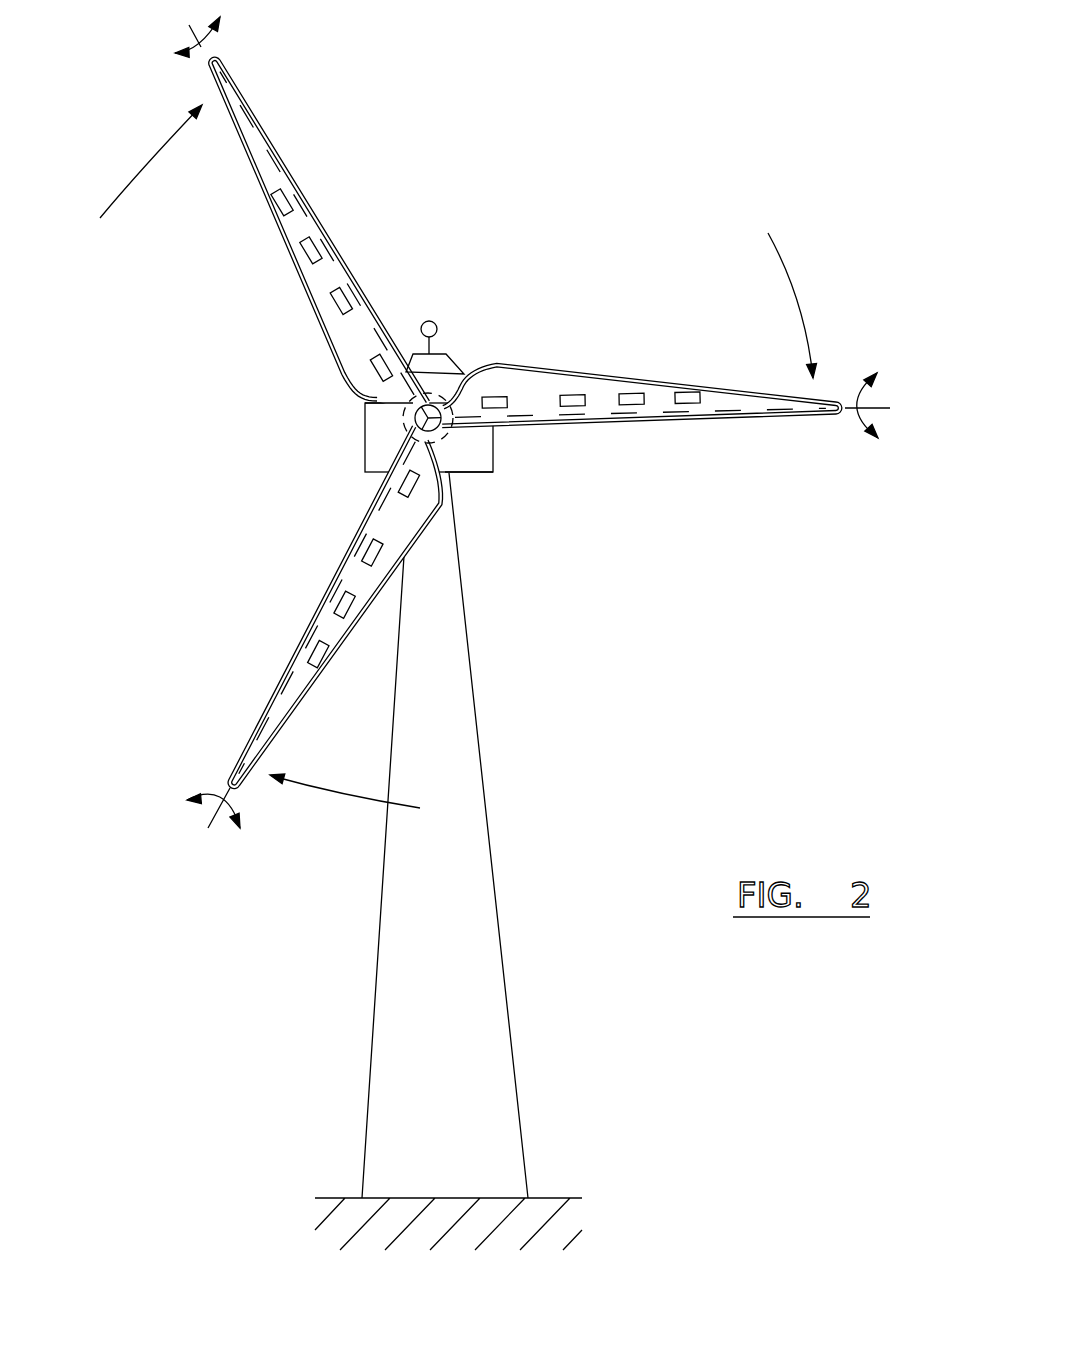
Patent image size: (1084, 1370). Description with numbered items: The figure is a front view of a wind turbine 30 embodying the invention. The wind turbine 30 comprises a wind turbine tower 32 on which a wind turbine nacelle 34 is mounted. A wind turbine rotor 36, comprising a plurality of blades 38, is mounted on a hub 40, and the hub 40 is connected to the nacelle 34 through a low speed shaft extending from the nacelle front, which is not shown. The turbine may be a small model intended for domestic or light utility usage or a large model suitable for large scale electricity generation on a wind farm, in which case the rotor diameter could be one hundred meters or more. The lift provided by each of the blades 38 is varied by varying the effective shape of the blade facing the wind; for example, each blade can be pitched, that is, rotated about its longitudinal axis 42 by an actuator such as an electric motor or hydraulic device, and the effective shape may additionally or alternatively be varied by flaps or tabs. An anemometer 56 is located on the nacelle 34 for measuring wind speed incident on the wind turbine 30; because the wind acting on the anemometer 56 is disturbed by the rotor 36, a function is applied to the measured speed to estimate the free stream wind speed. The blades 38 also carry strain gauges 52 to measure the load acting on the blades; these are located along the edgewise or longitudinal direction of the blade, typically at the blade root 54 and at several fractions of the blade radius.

The wind turbine 30 is at (495, 633).
The wind turbine tower 32 is at (492, 847).
The wind turbine nacelle 34 is at (485, 450).
The wind turbine rotor 36 is at (495, 422).
The blades 38 is at (602, 390).
The hub 40 is at (430, 408).
The longitudinal axis 42 is at (313, 217).
The strain gauges 52 is at (295, 190).
The blade root 54 is at (430, 453).
The anemometer 56 is at (429, 320).